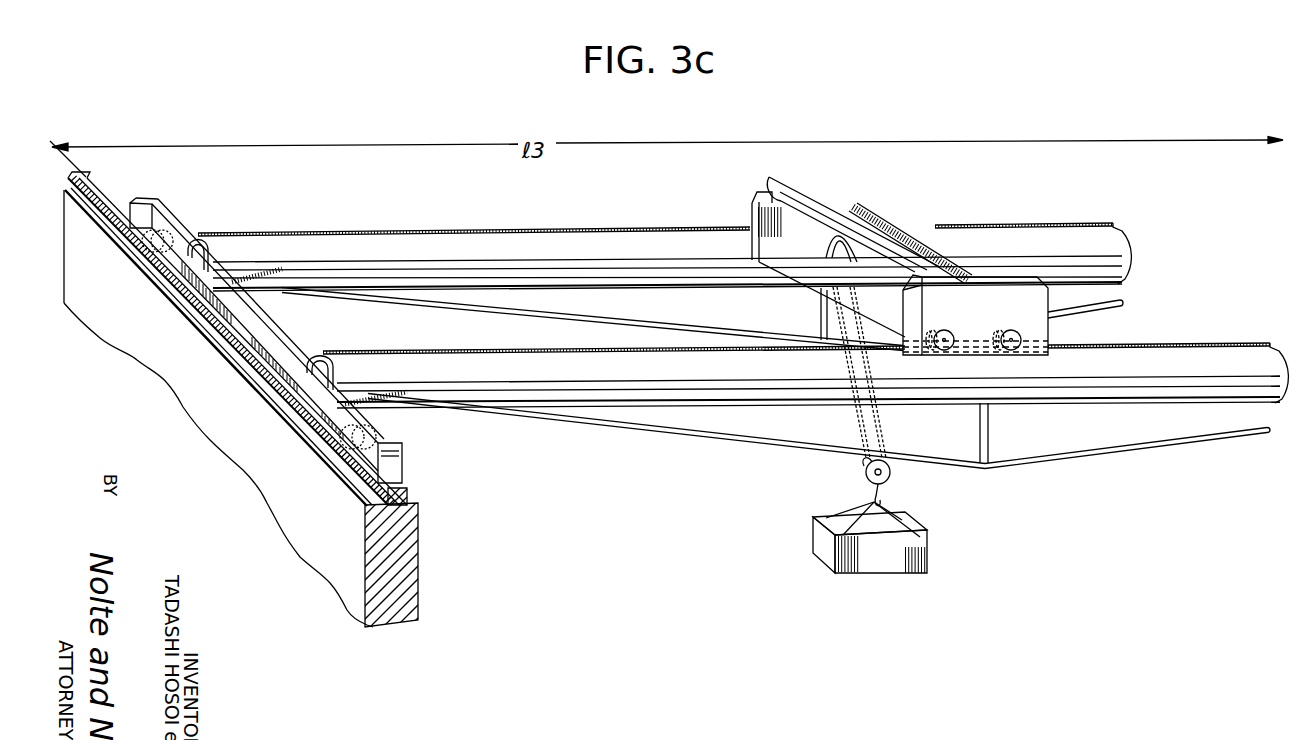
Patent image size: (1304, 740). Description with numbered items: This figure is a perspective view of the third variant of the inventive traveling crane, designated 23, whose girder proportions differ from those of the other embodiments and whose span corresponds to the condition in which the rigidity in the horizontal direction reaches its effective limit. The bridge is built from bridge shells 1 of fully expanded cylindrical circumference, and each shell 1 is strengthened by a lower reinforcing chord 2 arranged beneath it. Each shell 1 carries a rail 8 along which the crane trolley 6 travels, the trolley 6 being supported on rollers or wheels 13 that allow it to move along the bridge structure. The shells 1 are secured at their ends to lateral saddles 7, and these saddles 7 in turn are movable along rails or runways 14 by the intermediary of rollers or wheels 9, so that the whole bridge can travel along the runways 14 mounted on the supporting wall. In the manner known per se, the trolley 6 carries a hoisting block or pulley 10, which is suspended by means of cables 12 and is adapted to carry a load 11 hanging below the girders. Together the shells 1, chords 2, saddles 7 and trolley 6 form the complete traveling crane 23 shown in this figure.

The bridge shell 1 is at (715, 251).
The lower reinforcing chord 2 is at (609, 321).
The crane trolley 6 is at (887, 201).
The lateral saddle 7 is at (404, 463).
The rail 8 is at (955, 229).
The roller or wheel 9 is at (168, 230).
The hoisting block or pulley 10 is at (852, 470).
The load 11 is at (822, 533).
The cables 12 is at (857, 418).
The rollers or wheels 13 is at (1006, 328).
The rails or runways 14 is at (103, 193).
The crane embodiment 23 is at (618, 206).